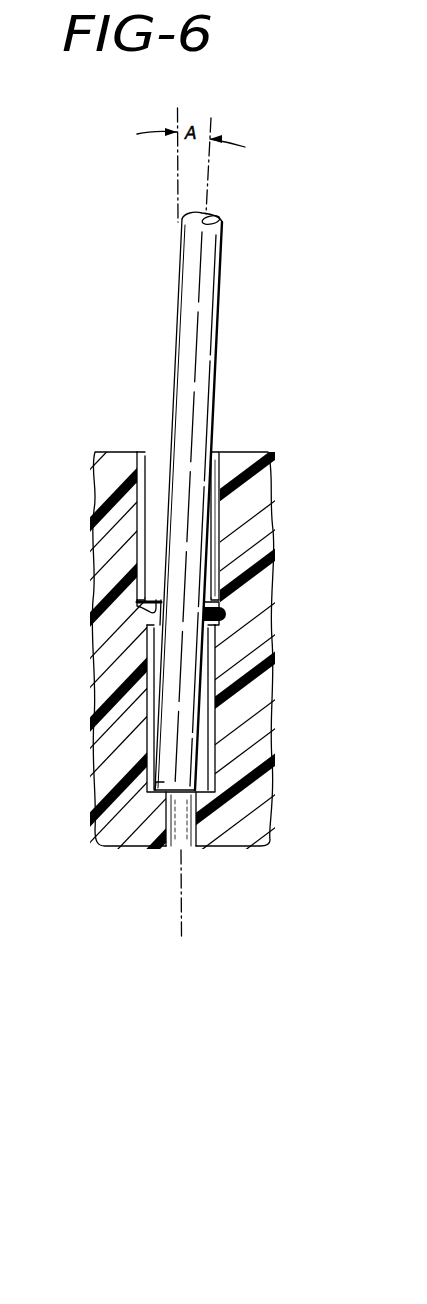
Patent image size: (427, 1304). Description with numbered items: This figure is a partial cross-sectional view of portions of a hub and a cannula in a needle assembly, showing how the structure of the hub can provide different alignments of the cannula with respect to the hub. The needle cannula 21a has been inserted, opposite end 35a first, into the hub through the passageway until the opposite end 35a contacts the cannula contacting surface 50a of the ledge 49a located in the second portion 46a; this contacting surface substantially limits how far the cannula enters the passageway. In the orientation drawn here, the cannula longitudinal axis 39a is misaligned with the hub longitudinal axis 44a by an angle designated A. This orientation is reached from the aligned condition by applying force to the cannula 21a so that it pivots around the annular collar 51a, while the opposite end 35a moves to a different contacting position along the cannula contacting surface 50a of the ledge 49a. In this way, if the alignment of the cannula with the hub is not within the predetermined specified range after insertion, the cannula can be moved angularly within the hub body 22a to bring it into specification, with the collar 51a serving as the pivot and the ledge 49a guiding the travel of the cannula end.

The needle cannula 21a is at (221, 293).
The housing block 22a is at (246, 450).
The second portion 46a is at (150, 453).
The cannula contacting surface 50a is at (220, 744).
The annular collar 51a is at (148, 605).
The opposite end 35a is at (155, 779).
The ledge 49a is at (160, 798).
The hub longitudinal axis 44a is at (177, 176).
The cannula longitudinal axis 39a is at (208, 157).